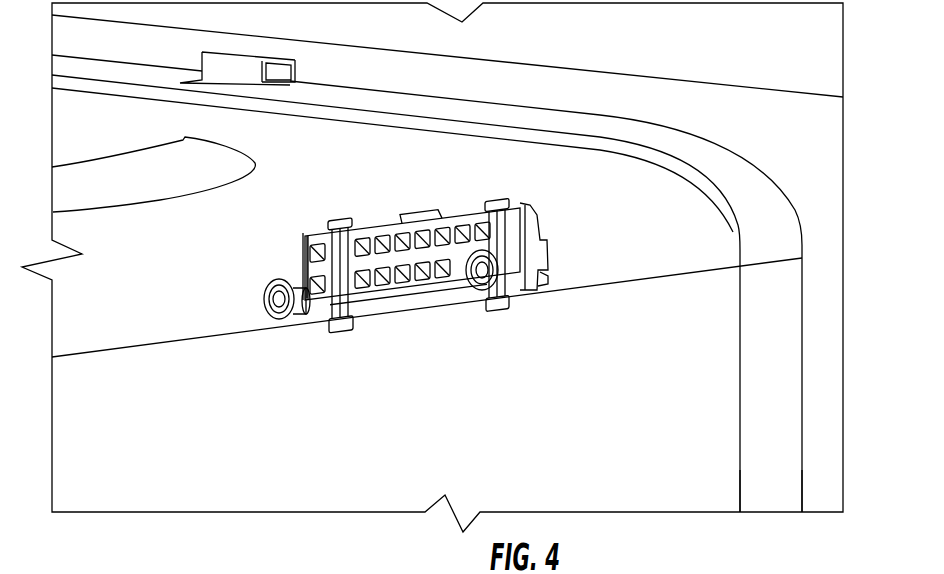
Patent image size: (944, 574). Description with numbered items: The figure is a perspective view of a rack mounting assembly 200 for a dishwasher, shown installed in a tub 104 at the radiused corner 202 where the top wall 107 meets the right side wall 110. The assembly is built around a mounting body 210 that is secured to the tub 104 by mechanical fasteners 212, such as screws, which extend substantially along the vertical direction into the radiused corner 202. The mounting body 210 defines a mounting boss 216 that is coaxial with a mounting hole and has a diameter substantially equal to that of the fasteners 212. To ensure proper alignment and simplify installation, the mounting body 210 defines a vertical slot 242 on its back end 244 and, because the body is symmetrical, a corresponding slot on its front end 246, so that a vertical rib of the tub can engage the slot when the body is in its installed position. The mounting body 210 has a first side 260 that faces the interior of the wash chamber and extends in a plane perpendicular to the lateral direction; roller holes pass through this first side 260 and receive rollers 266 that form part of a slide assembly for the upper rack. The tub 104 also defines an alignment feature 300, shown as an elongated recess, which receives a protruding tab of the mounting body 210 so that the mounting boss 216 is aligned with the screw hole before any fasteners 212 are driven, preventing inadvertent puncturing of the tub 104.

The tub 104 is at (68, 381).
The top wall 107 is at (97, 135).
The side wall 110 is at (700, 485).
The rack mounting assembly 200 is at (406, 297).
The radiused corner 202 is at (696, 160).
The mounting body 210 is at (418, 300).
The mechanical fastener 212 is at (498, 302).
The mounting boss 216 is at (512, 203).
The vertical slot 242 is at (550, 248).
The back end 244 is at (296, 253).
The front end 246 is at (551, 282).
The first side 260 is at (394, 268).
The roller 266 is at (278, 320).
The alignment feature 300 is at (406, 249).